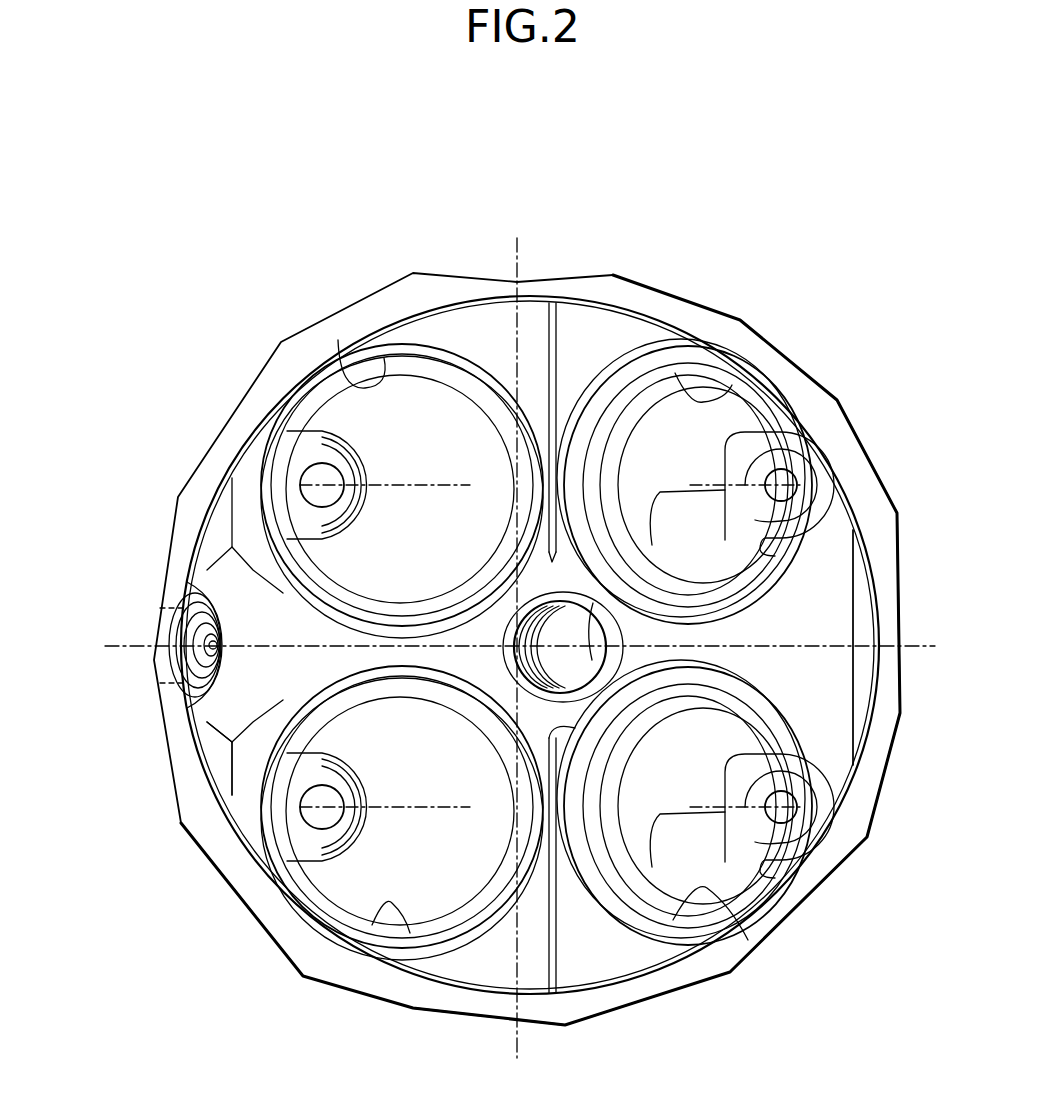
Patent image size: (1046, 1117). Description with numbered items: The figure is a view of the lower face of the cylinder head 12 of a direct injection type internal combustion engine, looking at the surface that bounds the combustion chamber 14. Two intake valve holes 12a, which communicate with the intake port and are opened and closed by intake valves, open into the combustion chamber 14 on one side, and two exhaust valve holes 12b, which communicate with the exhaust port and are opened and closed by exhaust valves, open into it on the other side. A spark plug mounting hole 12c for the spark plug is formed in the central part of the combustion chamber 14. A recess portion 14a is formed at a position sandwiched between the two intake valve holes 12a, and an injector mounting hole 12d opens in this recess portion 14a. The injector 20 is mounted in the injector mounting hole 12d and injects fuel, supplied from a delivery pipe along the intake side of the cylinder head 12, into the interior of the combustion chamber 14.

The cylinder head 12 is at (636, 276).
The intake valve hole 12a is at (350, 377).
The exhaust valve hole 12b is at (737, 393).
The spark plug mounting hole 12c is at (590, 627).
The injector mounting hole 12d is at (185, 622).
The combustion chamber 14 is at (810, 635).
The recess portion 14a is at (232, 703).
The injector 20 is at (228, 630).